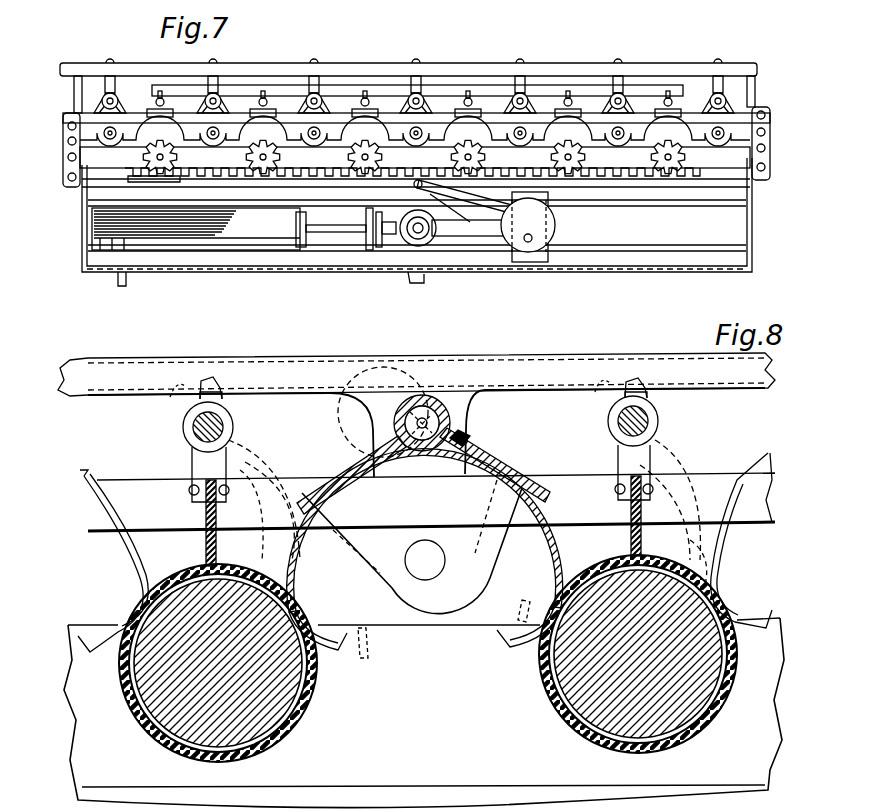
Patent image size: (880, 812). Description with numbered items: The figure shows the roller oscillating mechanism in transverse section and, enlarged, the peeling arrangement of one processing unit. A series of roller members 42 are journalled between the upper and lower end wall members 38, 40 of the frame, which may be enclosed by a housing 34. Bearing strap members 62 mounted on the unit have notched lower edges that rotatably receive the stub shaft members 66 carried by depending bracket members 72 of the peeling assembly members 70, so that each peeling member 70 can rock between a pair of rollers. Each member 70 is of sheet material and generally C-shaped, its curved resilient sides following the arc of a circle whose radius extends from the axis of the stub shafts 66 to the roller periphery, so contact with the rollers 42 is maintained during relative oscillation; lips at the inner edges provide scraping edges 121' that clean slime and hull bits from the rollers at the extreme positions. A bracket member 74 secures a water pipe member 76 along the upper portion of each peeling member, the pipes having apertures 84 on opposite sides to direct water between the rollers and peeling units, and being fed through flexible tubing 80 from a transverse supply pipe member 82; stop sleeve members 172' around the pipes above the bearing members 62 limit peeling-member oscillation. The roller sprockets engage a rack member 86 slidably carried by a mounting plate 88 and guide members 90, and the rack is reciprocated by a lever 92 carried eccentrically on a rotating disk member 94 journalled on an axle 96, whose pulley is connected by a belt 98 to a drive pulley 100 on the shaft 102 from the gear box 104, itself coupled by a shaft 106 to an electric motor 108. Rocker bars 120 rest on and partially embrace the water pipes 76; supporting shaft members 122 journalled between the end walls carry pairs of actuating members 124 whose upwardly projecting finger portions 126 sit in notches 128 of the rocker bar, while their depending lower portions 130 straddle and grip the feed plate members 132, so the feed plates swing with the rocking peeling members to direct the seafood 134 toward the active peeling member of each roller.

In FIG. 7, the housing 34 is at (416, 284).
In FIG. 7, the upper end wall member 38 is at (63, 161).
In FIG. 8, the lower end wall member 40 is at (292, 560).
In FIG. 8, the roller member 42 is at (298, 712).
In FIG. 7, the bearing strap member 62 is at (425, 120).
In FIG. 8, the bearing strap member 62 is at (556, 490).
In FIG. 7, the stub shaft member 66 is at (615, 126).
In FIG. 8, the stub shaft member 66 is at (425, 560).
In FIG. 8, the peeling assembly member 70 is at (120, 532).
In FIG. 8, the depending bracket member 72 is at (468, 570).
In FIG. 8, the bracket member 74 is at (465, 418).
In FIG. 8, the water pipe member 76 is at (432, 405).
In FIG. 7, the flexible tubing 80 is at (380, 96).
In FIG. 7, the supply pipe member 82 is at (254, 65).
In FIG. 8, the aperture 84 is at (432, 455).
In FIG. 7, the rack member 86 is at (232, 178).
In FIG. 7, the mounting plate 88 is at (636, 188).
In FIG. 7, the guide member 90 is at (150, 177).
In FIG. 7, the lever 92 is at (470, 205).
In FIG. 7, the rotating disk member 94 is at (556, 224).
In FIG. 7, the axle 96 is at (529, 242).
In FIG. 7, the belt 98 is at (476, 248).
In FIG. 7, the drive pulley 100 is at (414, 214).
In FIG. 7, the shaft 102 is at (413, 233).
In FIG. 7, the gear box 104 is at (372, 215).
In FIG. 7, the shaft 106 is at (376, 238).
In FIG. 7, the electric motor 108 is at (312, 242).
In FIG. 7, the rocker bar 120 is at (489, 85).
In FIG. 8, the rocker bar 120 is at (566, 368).
In FIG. 8, the scraping edge 121' is at (424, 713).
In FIG. 8, the supporting shaft member 122 is at (226, 434).
In FIG. 8, the actuating member 124 is at (228, 414).
In FIG. 8, the finger portion 126 is at (636, 376).
In FIG. 8, the notch 128 is at (200, 380).
In FIG. 8, the depending lower portion 130 is at (210, 462).
In FIG. 8, the feed plate member 132 is at (207, 540).
In FIG. 8, the seafood 134 is at (267, 560).
In FIG. 8, the stop sleeve member 172' is at (488, 428).